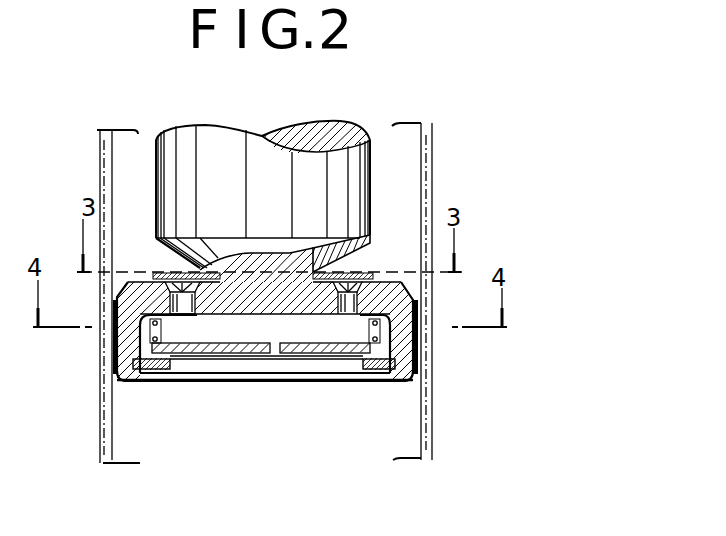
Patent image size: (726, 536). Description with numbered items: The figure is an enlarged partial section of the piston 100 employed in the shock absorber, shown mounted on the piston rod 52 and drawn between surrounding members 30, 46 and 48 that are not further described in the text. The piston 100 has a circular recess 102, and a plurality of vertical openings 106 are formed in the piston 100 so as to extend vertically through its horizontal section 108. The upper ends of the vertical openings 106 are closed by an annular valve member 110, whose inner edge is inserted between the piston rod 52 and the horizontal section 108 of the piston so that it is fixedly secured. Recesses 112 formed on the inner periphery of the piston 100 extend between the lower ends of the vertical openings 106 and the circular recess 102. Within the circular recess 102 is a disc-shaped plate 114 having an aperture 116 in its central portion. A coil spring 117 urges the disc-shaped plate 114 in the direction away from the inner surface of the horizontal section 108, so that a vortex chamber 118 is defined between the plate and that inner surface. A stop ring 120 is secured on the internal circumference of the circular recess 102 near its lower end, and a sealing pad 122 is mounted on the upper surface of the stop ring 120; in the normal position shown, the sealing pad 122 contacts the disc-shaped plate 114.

The shaft 30 is at (427, 168).
The wall member 46 is at (123, 177).
The wall member 48 is at (123, 412).
The piston rod 52 is at (235, 158).
The piston 100 is at (412, 281).
The circular recess 102 is at (122, 330).
The vertical openings 106 is at (165, 298).
The horizontal section 108 is at (210, 318).
The annular valve member 110 is at (165, 268).
The recesses 112 is at (388, 332).
The disc-shaped plate 114 is at (318, 354).
The aperture 116 is at (254, 362).
The coil spring 117 is at (367, 364).
The vortex chamber 118 is at (343, 360).
The stop ring 120 is at (148, 372).
The sealing pad 122 is at (133, 364).